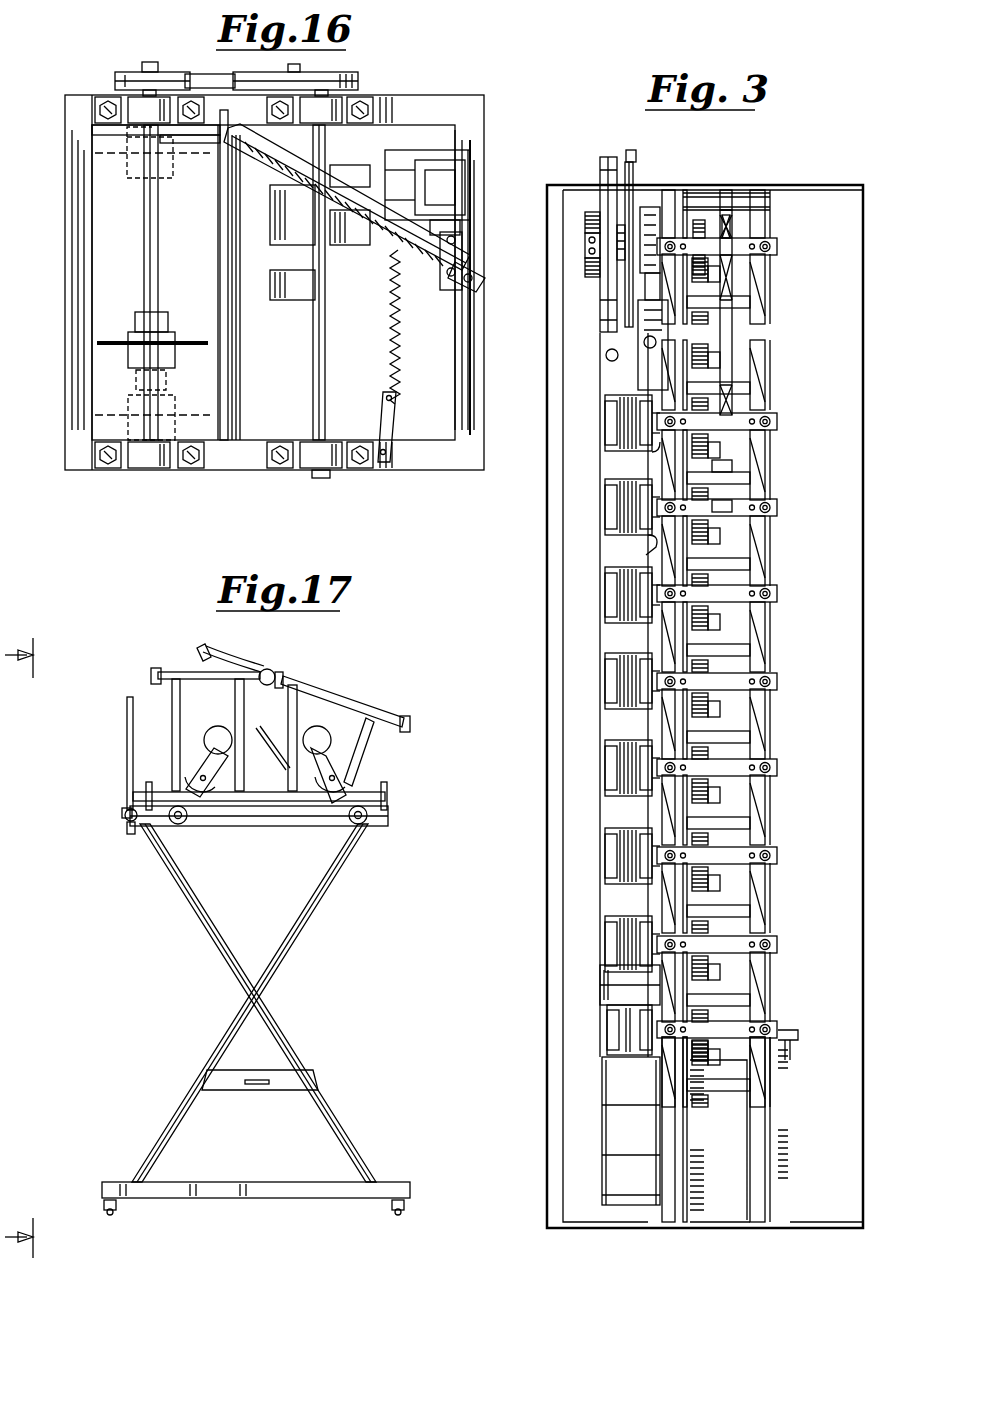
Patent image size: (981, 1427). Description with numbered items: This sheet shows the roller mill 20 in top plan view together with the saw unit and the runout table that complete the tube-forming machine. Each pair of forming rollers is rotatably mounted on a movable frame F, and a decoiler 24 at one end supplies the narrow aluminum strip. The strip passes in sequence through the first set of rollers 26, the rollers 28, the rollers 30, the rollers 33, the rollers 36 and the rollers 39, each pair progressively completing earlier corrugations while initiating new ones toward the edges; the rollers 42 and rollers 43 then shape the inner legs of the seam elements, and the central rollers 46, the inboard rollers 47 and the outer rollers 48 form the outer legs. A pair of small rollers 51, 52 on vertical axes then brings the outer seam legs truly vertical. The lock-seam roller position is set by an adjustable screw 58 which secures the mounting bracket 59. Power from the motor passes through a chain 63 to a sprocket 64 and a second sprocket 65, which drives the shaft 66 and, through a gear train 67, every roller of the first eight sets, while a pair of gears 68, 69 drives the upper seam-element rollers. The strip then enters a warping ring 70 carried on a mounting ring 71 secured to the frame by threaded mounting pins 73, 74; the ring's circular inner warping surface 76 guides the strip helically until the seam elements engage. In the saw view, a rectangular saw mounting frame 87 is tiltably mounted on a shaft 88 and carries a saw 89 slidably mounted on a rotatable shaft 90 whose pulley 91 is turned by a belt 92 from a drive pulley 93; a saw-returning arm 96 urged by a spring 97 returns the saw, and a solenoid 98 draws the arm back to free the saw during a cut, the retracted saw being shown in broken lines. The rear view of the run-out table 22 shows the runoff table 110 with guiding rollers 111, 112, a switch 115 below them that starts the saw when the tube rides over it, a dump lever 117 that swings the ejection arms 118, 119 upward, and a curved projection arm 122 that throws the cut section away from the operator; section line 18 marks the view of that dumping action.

In FIG. 3, the roller mill 20 is at (512, 748).
In FIG. 3, the movable frame F is at (533, 825).
In FIG. 3, the decoiler 24 is at (602, 1080).
In FIG. 3, the first set of rollers 26 is at (610, 1023).
In FIG. 3, the second pair of rollers 28 is at (607, 933).
In FIG. 3, the third pair of rollers 30 is at (607, 865).
In FIG. 3, the fourth pair of rollers 33 is at (606, 769).
In FIG. 3, the fifth pair of rollers 36 is at (606, 678).
In FIG. 3, the sixth pair of rollers 39 is at (605, 591).
In FIG. 3, the rollers at the right 42 is at (646, 548).
In FIG. 3, the rollers at the left 43 is at (605, 487).
In FIG. 3, the central pair of rollers 46 is at (605, 400).
In FIG. 3, the inboard set of rollers 47 is at (650, 458).
In FIG. 3, the outer pair of rollers 48 is at (605, 424).
In FIG. 3, the roller 51 is at (606, 357).
In FIG. 3, the roller 52 is at (658, 340).
In FIG. 3, the adjustable screw 58 is at (652, 173).
In FIG. 3, the mounting bracket 59 is at (586, 245).
In FIG. 3, the chain 63 is at (733, 353).
In FIG. 3, the sprocket 64 is at (717, 200).
In FIG. 3, the second sprocket 65 is at (723, 438).
In FIG. 3, the shaft 66 is at (638, 380).
In FIG. 3, the gear train 67 is at (724, 488).
In FIG. 3, the gear 68 is at (707, 212).
In FIG. 3, the gear 69 is at (700, 209).
In FIG. 3, the warping ring 70 is at (600, 165).
In FIG. 3, the mounting ring 71 is at (610, 157).
In FIG. 3, the threaded mounting pin 73 is at (586, 222).
In FIG. 3, the threaded mounting pin 74 is at (584, 274).
In FIG. 3, the circular inner warping surface 76 is at (618, 216).
In FIG. 16, the saw mounting frame 87 is at (475, 358).
In FIG. 16, the shaft 88 is at (325, 482).
In FIG. 16, the saw 89 is at (97, 156).
In FIG. 16, the rotatable shaft 90 is at (159, 222).
In FIG. 16, the pulley 91 is at (128, 74).
In FIG. 16, the belt 92 is at (194, 77).
In FIG. 16, the drive pulley 93 is at (335, 67).
In FIG. 16, the saw-returning arm 96 is at (274, 167).
In FIG. 16, the spring 97 is at (395, 333).
In FIG. 16, the solenoid 98 is at (453, 182).
In FIG. 17, the section line 18 is at (34, 948).
In FIG. 17, the run-out table 22 is at (160, 1050).
In FIG. 17, the runoff table 110 is at (306, 952).
In FIG. 17, the guiding roller 111 is at (337, 722).
In FIG. 17, the guiding roller 112 is at (204, 738).
In FIG. 17, the switch 115 is at (250, 721).
In FIG. 17, the dump lever 117 is at (127, 731).
In FIG. 17, the ejection arm 118 is at (183, 673).
In FIG. 17, the ejection arm 119 is at (321, 691).
In FIG. 17, the projection arm 122 is at (224, 649).